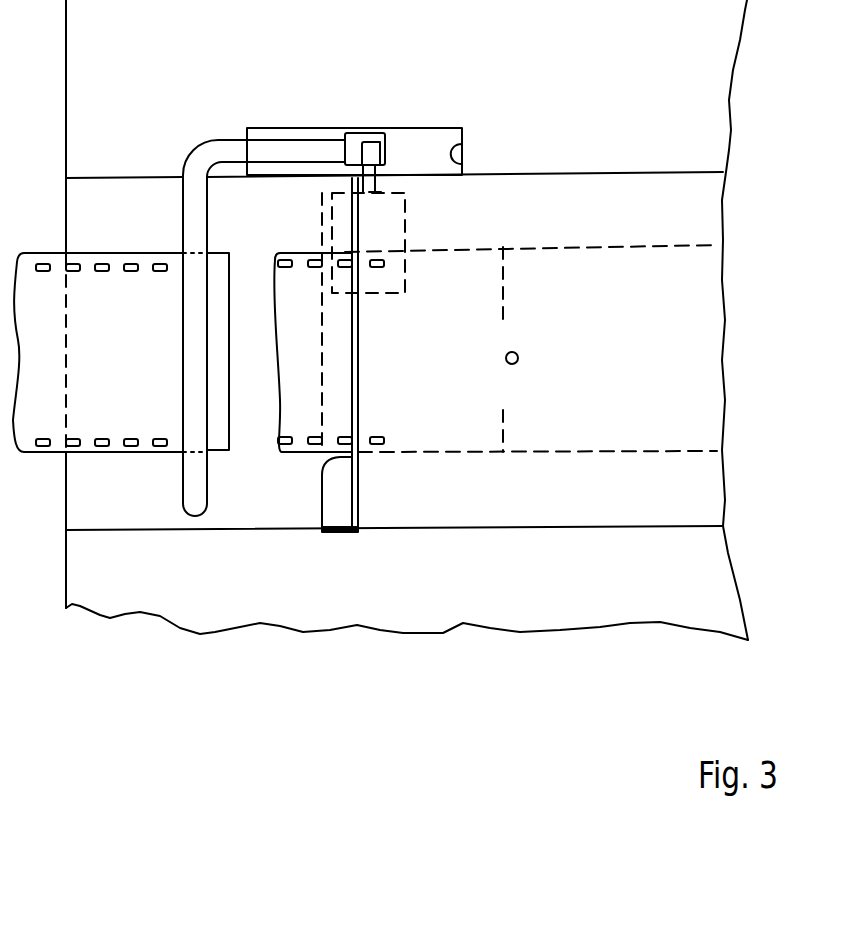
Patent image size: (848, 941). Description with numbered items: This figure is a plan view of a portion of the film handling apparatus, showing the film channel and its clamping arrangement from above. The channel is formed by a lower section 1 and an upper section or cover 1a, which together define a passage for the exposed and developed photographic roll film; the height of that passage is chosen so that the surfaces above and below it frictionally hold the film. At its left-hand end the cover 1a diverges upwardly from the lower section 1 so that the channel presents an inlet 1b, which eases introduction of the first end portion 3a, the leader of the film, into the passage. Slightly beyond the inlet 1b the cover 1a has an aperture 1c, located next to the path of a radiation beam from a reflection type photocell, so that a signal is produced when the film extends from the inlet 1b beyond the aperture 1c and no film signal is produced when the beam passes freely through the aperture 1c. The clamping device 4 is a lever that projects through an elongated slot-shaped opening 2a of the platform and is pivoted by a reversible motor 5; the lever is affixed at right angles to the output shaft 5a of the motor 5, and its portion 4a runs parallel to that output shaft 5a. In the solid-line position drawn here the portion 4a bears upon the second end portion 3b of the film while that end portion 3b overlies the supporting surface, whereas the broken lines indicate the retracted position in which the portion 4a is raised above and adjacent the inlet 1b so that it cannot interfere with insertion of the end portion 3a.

The lower section 1 is at (340, 518).
The upper section or cover 1a is at (372, 507).
The inlet 1b is at (320, 462).
The aperture 1c is at (518, 352).
The elongated slot-shaped opening 2a is at (463, 150).
The first end portion 3a is at (481, 427).
The second end portion 3b is at (221, 268).
The clamping device 4 is at (242, 158).
The portion of the lever 4a is at (198, 435).
The motor 5 is at (416, 194).
The output shaft 5a is at (397, 172).